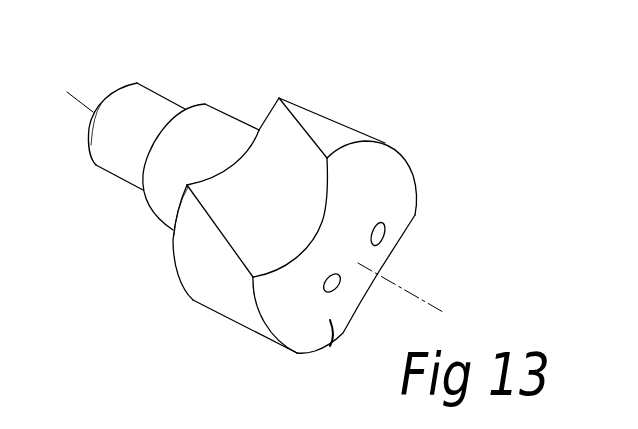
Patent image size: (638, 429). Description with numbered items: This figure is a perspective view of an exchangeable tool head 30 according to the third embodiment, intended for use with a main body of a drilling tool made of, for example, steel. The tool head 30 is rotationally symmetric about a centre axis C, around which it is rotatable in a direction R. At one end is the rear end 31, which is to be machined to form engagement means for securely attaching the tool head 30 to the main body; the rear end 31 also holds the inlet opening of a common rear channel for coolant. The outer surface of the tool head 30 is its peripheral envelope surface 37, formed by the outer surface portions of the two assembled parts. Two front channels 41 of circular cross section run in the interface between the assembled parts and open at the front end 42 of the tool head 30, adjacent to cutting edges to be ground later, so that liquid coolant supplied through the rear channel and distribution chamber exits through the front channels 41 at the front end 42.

The tool head 30 is at (414, 119).
The rear end 31 is at (103, 108).
The peripheral envelope surface 37 is at (223, 285).
The front channels 41 is at (338, 286).
The front end 42 is at (330, 320).
The centre axis C is at (266, 212).
The direction of rotation R is at (233, 128).